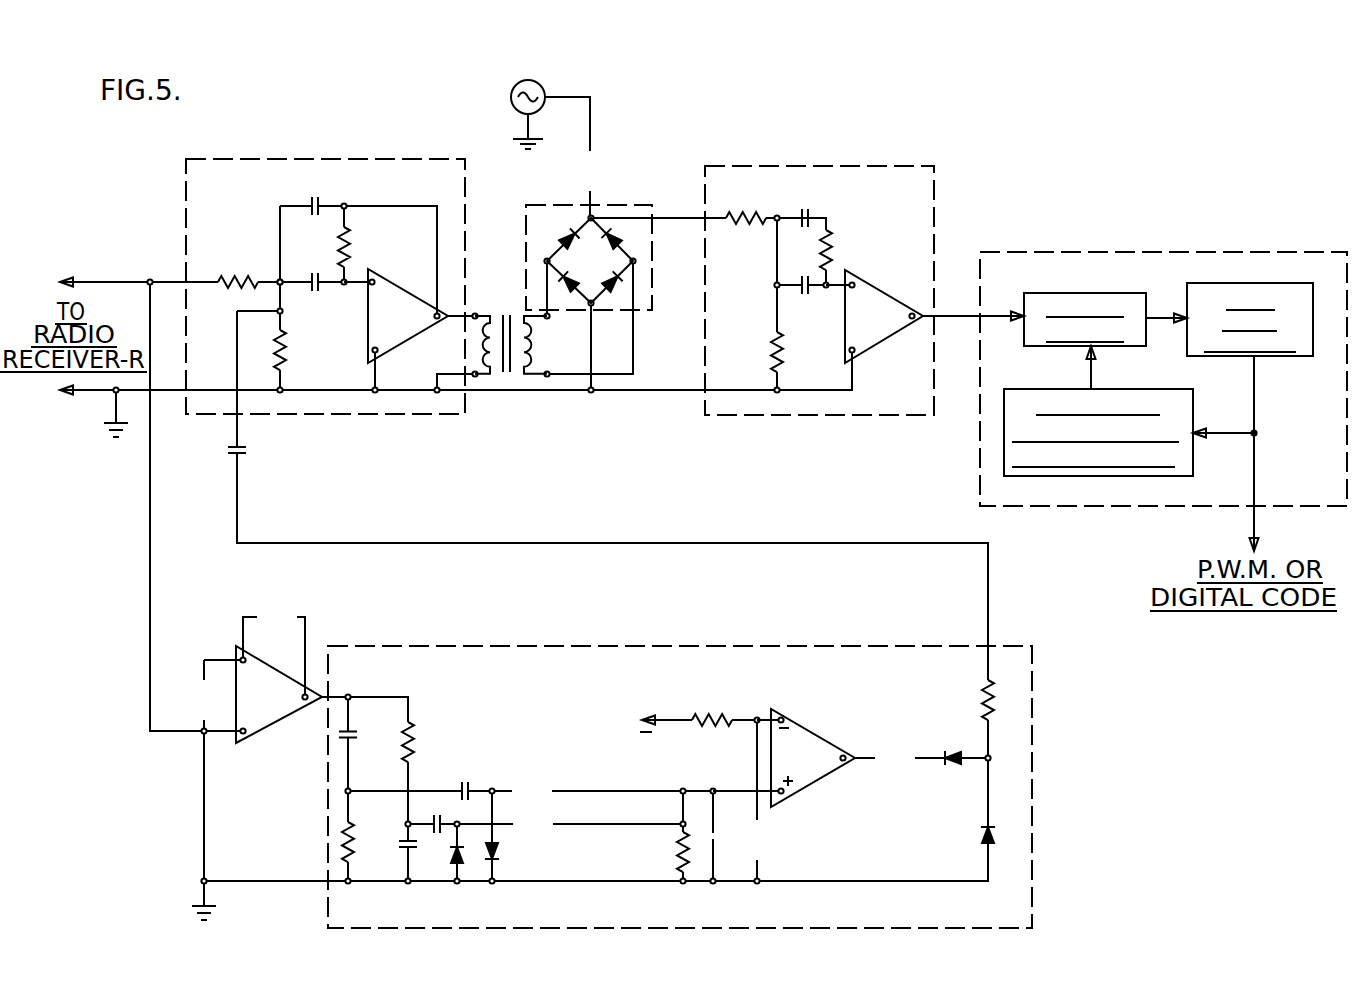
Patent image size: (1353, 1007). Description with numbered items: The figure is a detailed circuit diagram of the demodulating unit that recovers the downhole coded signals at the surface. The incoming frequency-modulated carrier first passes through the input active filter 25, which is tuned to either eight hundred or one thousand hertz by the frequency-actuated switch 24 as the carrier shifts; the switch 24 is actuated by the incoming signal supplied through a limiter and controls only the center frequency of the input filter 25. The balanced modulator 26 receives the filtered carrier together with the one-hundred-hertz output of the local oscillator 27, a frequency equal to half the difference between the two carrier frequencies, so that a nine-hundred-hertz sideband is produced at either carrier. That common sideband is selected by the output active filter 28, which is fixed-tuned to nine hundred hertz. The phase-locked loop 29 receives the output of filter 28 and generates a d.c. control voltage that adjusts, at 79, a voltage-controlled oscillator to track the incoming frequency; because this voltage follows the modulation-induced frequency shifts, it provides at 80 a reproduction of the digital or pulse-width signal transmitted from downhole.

The frequency-actuated switch 24 is at (881, 645).
The input active filter 25 is at (405, 158).
The balanced modulator 26 is at (606, 266).
The local oscillator 27 is at (543, 82).
The output active filter 28 is at (930, 165).
The phase-locked loop 29 is at (1157, 250).
The control input 79 is at (1224, 425).
The output 80 is at (1257, 536).